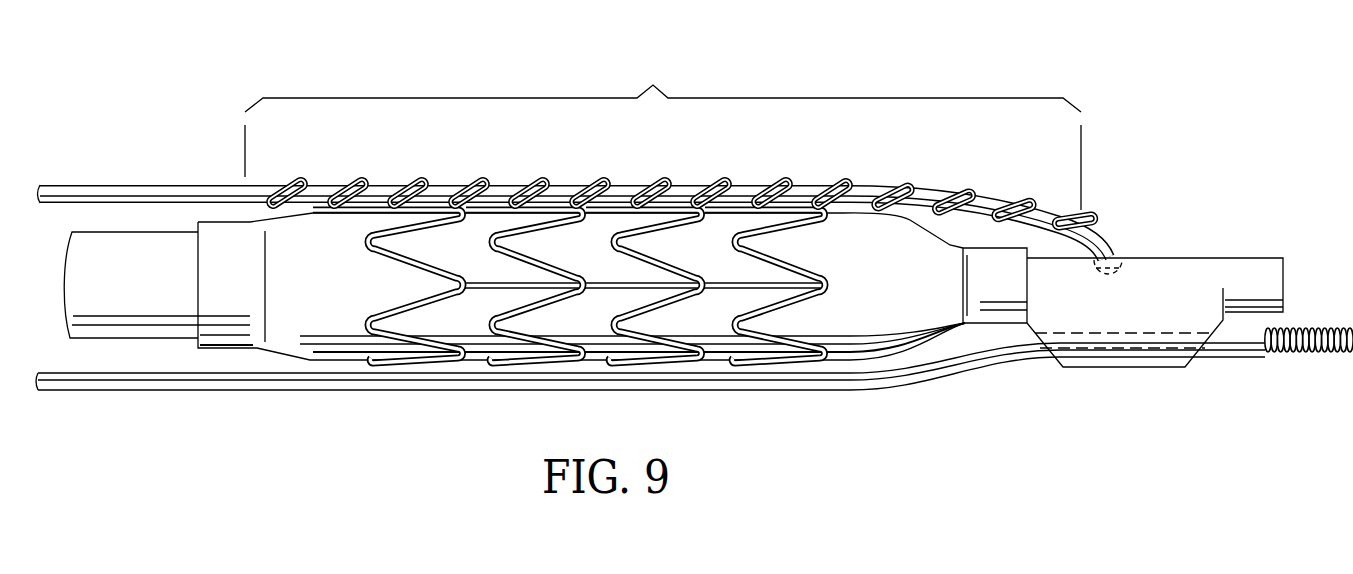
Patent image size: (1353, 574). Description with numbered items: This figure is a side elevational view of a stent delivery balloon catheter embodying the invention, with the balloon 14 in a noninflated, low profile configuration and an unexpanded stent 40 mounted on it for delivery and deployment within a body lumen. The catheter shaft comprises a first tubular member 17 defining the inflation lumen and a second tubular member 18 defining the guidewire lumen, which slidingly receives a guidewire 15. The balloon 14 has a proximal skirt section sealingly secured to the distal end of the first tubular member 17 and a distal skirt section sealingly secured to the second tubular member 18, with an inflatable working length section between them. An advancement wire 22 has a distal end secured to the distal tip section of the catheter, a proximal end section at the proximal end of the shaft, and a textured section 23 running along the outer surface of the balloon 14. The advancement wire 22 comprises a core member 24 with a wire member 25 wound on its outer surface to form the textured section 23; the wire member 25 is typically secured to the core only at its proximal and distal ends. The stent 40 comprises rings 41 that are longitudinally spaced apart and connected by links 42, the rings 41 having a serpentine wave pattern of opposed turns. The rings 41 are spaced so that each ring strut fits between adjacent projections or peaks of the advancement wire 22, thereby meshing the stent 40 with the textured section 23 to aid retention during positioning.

The balloon 14 is at (288, 355).
The guidewire 15 is at (970, 367).
The first tubular member 17 is at (148, 340).
The second tubular member 18 is at (1115, 367).
The advancement wire 22 is at (142, 186).
The textured section 23 is at (663, 128).
The core member 24 is at (858, 179).
The wire member 25 is at (957, 180).
The stent 40 is at (846, 266).
The rings 41 is at (515, 362).
The links 42 is at (493, 282).